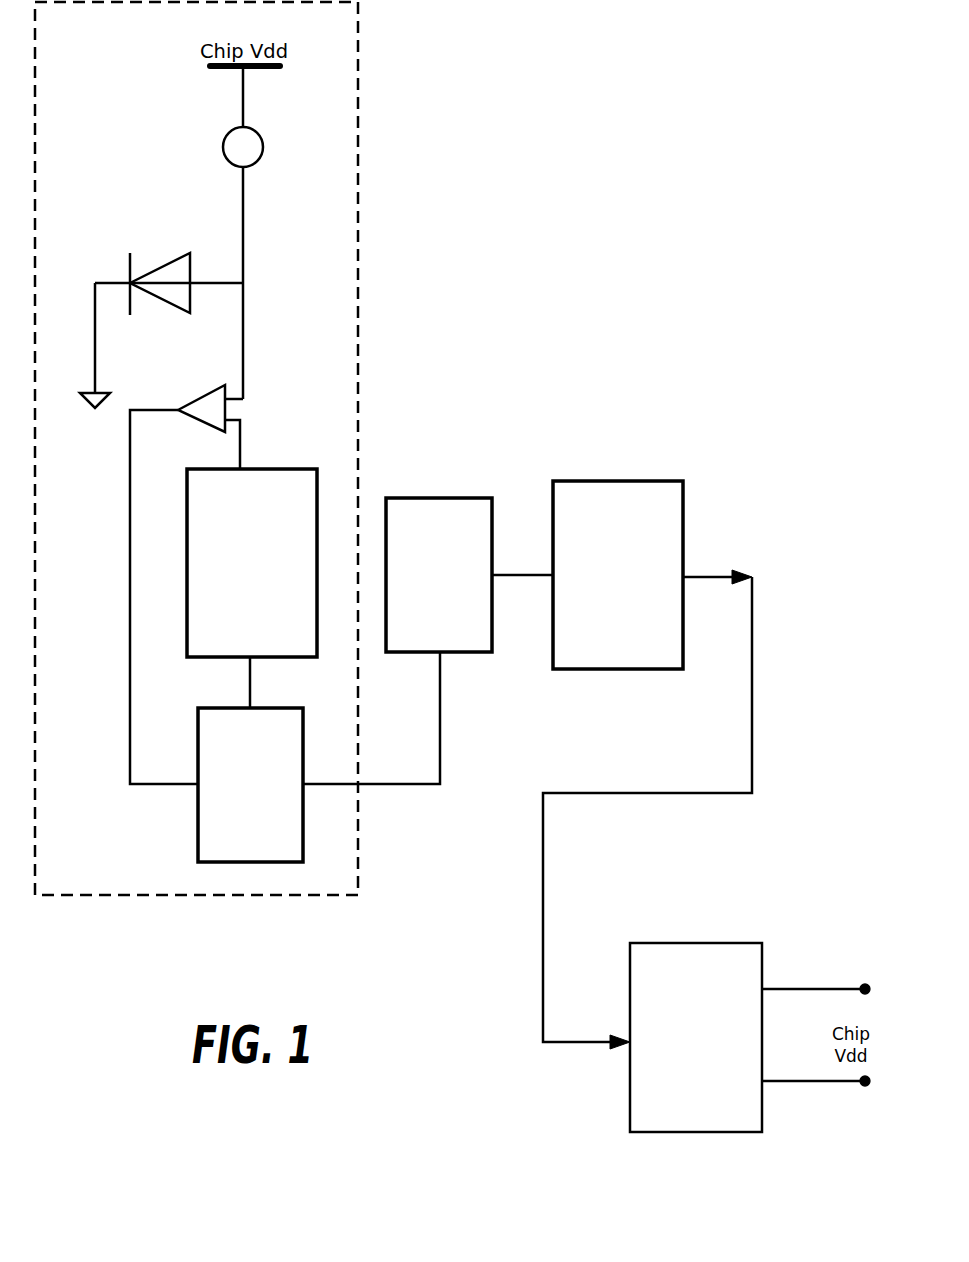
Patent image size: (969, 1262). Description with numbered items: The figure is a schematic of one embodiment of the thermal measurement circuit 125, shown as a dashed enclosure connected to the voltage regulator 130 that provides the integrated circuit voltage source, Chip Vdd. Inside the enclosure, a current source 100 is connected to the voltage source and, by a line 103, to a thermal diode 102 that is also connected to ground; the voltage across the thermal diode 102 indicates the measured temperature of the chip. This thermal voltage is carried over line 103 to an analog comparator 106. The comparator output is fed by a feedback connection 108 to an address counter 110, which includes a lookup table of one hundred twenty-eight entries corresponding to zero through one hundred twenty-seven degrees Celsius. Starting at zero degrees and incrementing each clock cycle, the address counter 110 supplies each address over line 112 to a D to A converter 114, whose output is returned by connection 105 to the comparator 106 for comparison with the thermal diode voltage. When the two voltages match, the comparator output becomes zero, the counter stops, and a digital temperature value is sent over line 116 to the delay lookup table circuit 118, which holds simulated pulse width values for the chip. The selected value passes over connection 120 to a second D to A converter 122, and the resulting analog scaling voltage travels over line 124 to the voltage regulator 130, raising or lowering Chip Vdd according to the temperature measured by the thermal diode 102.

The current source 100 is at (262, 148).
The thermal diode 102 is at (155, 265).
The line 103 is at (247, 272).
The comparator output line 105 is at (243, 444).
The analog comparator 106 is at (190, 400).
The feedback line 108 is at (128, 605).
The address counter 110 is at (250, 785).
The line 112 is at (253, 683).
The D to A converter 114 is at (252, 563).
The line 116 is at (440, 727).
The delay lookup table circuit 118 is at (439, 575).
The look up table output line 120 is at (532, 575).
The D to A converter 122 is at (618, 575).
The line 124 is at (697, 580).
The thermal measurement circuit 125 is at (196, 448).
The voltage regulator 130 is at (750, 1037).